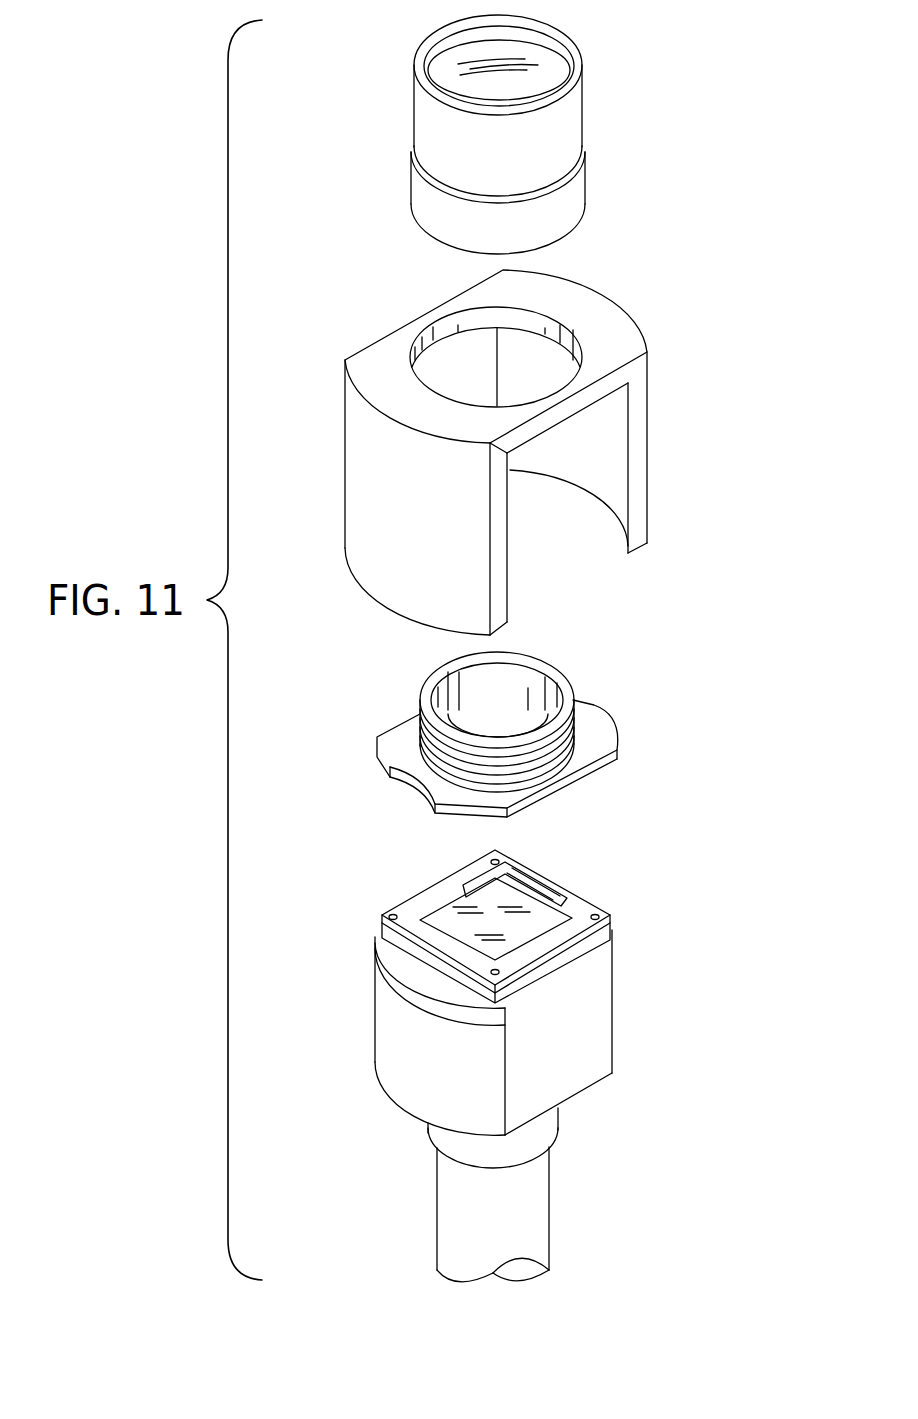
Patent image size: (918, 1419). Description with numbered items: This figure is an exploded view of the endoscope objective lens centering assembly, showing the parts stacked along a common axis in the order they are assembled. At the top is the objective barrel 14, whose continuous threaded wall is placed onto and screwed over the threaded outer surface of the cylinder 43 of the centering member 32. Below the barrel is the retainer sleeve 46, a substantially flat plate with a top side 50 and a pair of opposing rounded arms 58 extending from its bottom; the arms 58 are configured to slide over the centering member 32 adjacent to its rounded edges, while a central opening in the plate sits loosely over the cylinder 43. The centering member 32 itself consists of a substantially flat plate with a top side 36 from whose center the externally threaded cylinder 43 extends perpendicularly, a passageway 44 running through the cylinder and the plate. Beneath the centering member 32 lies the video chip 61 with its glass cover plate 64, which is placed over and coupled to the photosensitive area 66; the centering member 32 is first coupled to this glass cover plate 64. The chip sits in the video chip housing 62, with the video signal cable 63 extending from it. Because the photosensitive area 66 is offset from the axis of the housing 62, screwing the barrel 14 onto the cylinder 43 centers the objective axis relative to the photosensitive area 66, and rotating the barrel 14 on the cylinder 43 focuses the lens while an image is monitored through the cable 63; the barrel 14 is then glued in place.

The objective barrel 14 is at (628, 124).
The centering member 32 is at (537, 711).
The top side 36 is at (395, 748).
The cylinder 43 is at (440, 665).
The passageway 44 is at (502, 723).
The retainer sleeve 46 is at (562, 452).
The top side 50 is at (400, 387).
The rounded arms 58 is at (607, 472).
The video chip 61 is at (524, 916).
The video chip housing 62 is at (575, 1061).
The video signal cable 63 is at (510, 1231).
The glass cover plate 64 is at (425, 893).
The photosensitive area 66 is at (520, 905).